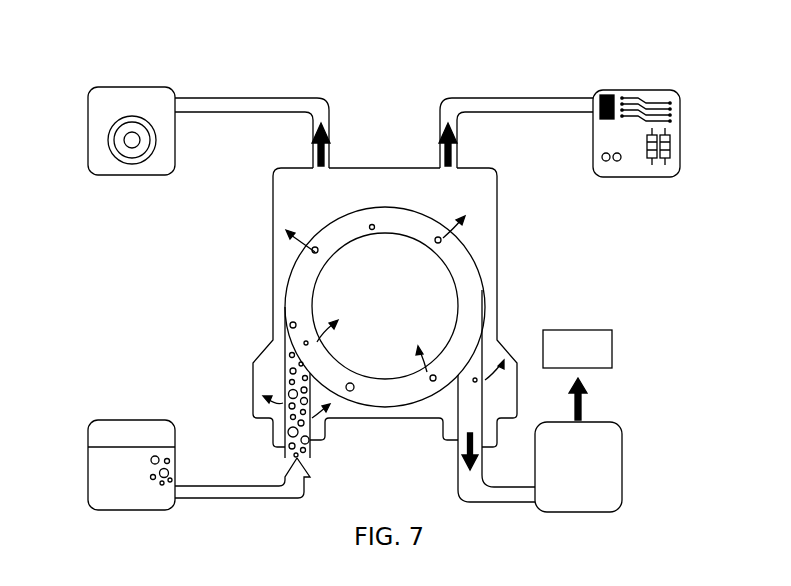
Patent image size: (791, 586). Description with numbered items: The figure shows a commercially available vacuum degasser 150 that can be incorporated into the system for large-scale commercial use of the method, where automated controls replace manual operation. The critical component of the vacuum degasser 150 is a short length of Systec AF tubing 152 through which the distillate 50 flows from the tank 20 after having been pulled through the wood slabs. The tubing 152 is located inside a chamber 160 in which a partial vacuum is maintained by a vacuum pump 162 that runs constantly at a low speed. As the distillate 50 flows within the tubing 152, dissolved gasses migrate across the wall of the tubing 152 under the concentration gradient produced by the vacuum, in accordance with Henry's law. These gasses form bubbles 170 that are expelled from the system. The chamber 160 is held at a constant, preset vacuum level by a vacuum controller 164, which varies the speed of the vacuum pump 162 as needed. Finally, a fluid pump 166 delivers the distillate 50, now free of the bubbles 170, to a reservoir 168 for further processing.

The tank 20 is at (86, 435).
The distillate 50 is at (115, 445).
The vacuum degasser 150 is at (531, 75).
The tubing 152 is at (288, 302).
The chamber 160 is at (497, 262).
The vacuum pump 162 is at (117, 87).
The vacuum controller 164 is at (652, 90).
The fluid pump 166 is at (564, 477).
The reservoir 168 is at (564, 360).
The bubbles 170 is at (285, 371).